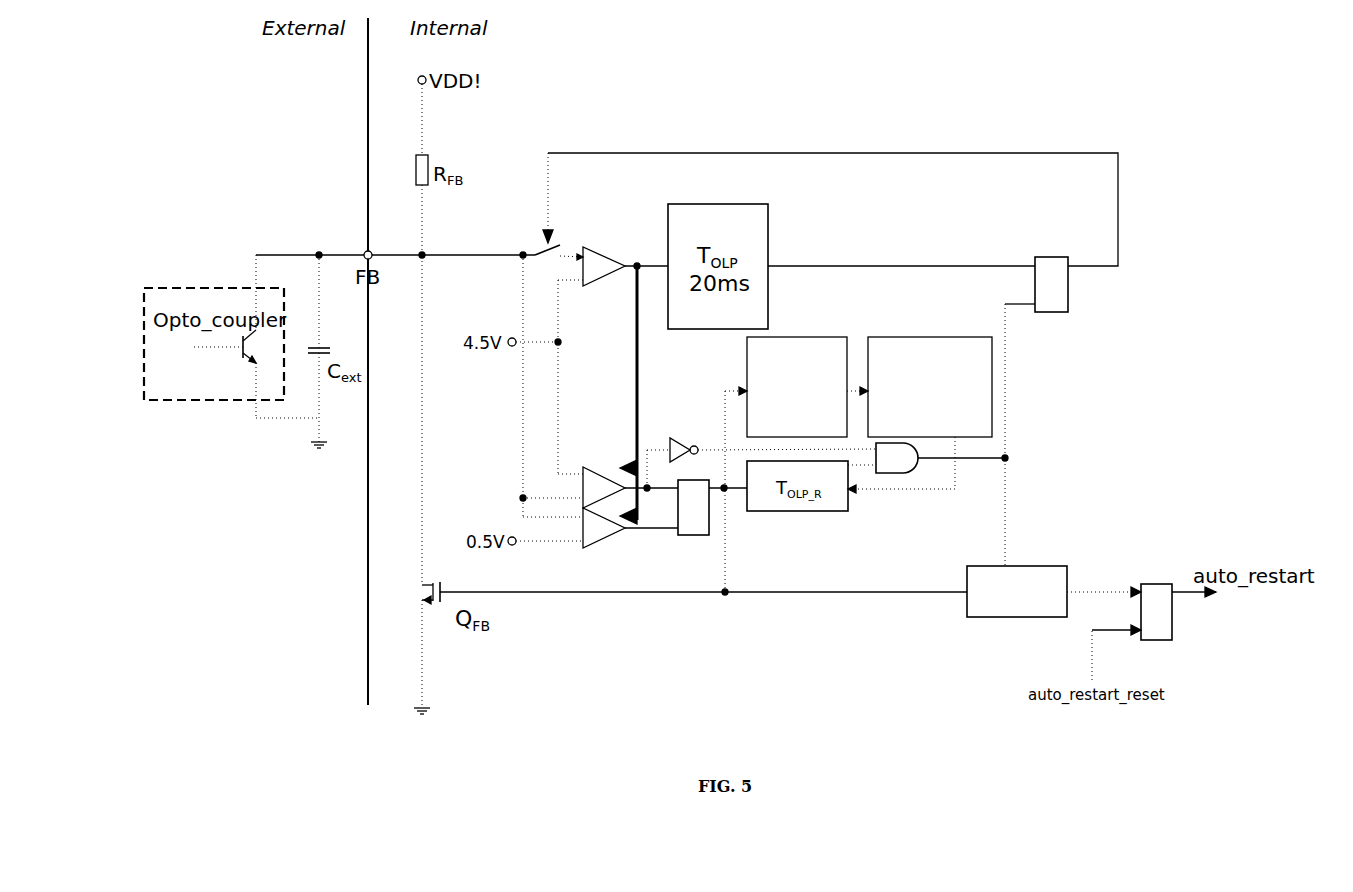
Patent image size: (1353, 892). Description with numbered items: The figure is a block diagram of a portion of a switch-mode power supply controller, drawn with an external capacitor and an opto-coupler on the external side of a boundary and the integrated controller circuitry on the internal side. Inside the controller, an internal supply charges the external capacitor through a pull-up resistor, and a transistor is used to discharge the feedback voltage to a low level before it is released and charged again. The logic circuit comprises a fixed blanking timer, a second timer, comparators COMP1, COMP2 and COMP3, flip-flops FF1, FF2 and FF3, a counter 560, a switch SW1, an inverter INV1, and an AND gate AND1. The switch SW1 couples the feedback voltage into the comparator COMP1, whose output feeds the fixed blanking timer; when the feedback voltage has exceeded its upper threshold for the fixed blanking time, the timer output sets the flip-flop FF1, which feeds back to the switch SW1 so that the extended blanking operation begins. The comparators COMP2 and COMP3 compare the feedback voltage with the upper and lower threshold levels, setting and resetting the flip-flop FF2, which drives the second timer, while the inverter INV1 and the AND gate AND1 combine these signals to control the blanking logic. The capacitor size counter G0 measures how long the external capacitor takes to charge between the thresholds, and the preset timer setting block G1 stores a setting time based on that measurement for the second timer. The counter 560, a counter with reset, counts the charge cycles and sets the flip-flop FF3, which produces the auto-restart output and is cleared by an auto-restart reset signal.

The counter 560 is at (1063, 565).
The switch SW1 is at (558, 214).
The comparator COMP1 is at (610, 252).
The comparator COMP2 is at (607, 470).
The comparator COMP3 is at (603, 550).
The inverter INV1 is at (684, 438).
The flip-flop FF1 is at (1052, 274).
The flip-flop FF2 is at (695, 497).
The flip-flop FF3 is at (1158, 603).
The AND gate AND1 is at (897, 458).
The capacitor size counter G0 is at (797, 374).
The preset timer setting block G1 is at (930, 374).